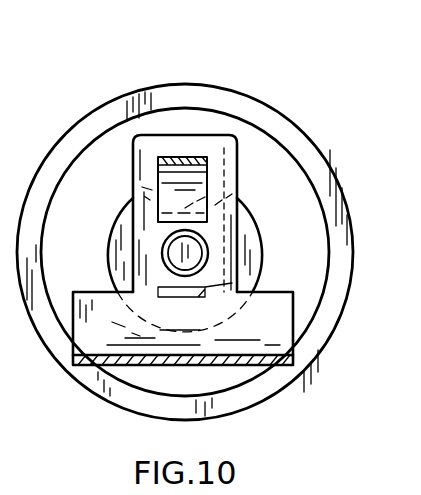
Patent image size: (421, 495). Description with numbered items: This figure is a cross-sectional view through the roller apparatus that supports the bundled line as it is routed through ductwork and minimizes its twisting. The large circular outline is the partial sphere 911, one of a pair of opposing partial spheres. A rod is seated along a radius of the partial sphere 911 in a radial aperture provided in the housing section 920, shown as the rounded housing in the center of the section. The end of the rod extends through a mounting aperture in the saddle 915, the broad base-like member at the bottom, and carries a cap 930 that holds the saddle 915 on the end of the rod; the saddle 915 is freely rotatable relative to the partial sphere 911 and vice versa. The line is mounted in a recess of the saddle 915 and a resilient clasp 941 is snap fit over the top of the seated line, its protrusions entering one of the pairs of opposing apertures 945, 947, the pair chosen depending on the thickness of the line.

The partial sphere 911 is at (256, 108).
The saddle 915 is at (296, 352).
The housing section 920 is at (112, 238).
The cap 930 is at (259, 237).
The clasp 941 is at (167, 157).
The aperture 945 is at (213, 205).
The aperture 947 is at (200, 257).